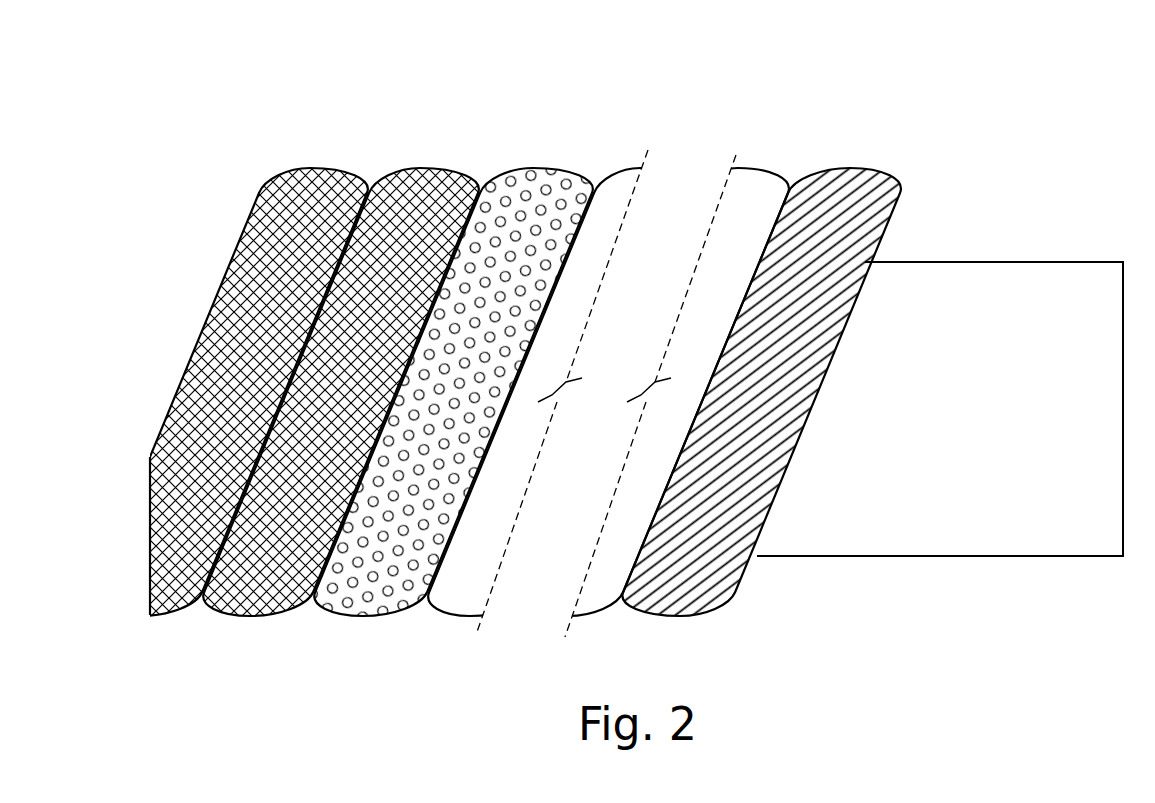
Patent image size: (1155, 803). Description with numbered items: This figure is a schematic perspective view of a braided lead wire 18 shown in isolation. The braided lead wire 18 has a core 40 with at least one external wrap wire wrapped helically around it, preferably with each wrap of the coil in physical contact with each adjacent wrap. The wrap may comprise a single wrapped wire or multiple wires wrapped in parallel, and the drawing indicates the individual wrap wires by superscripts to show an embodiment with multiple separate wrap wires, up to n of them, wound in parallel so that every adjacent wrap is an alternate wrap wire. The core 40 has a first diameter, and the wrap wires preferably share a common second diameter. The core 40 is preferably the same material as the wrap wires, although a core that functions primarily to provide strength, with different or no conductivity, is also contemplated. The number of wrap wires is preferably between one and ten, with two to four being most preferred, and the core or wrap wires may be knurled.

The braided lead wire 18 is at (187, 233).
The core 40 is at (958, 479).